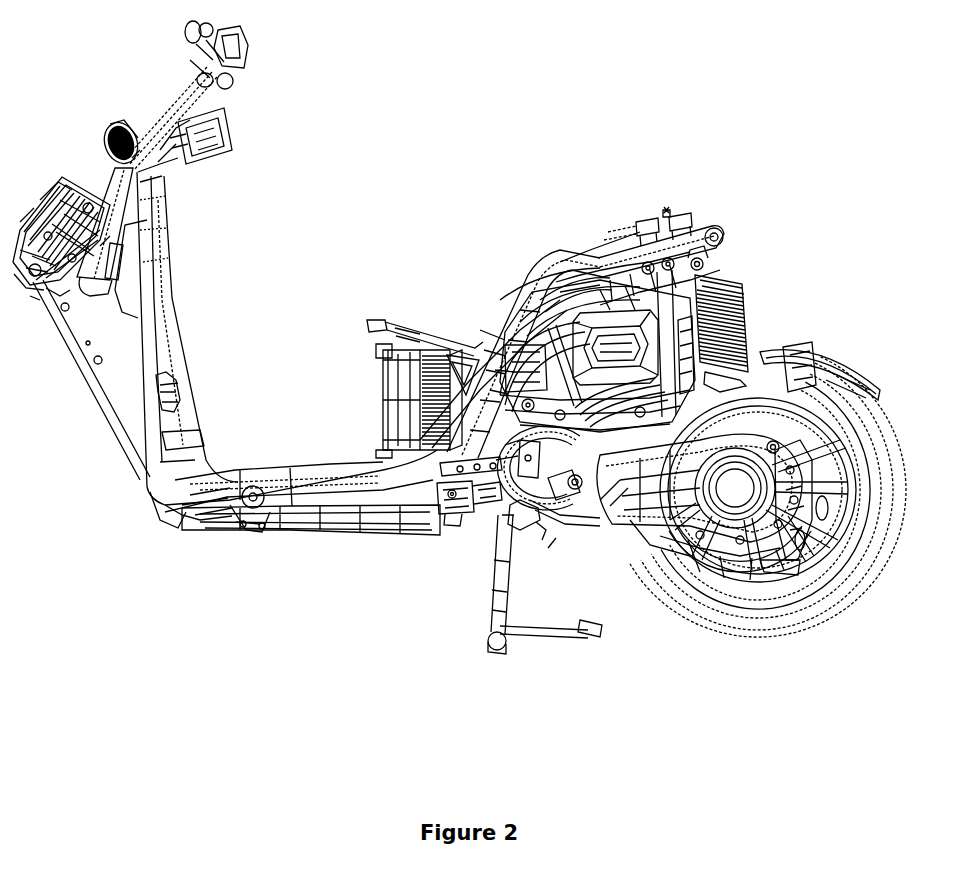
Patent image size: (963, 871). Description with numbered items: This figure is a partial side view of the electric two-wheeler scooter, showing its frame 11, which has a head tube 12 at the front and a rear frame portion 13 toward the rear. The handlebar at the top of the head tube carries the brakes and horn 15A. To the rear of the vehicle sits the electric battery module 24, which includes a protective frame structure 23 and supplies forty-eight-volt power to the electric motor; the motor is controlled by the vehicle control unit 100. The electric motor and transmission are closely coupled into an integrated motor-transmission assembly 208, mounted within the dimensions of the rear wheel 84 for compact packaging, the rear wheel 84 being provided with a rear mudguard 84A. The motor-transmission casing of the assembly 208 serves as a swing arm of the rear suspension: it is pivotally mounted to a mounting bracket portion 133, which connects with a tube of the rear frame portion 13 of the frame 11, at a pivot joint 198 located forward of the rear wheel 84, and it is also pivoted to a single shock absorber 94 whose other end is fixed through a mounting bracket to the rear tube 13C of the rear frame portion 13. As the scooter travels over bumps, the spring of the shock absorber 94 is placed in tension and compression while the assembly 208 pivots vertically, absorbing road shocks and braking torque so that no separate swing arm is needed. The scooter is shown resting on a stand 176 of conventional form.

The frame 11 is at (323, 197).
The head tube 12 is at (142, 344).
The rear frame portion 13 is at (580, 242).
The rear tube 13C is at (698, 254).
The brakes and horn 15A is at (116, 138).
The protective frame structure 23 is at (389, 312).
The electric battery module 24 is at (418, 403).
The vehicle control unit 100 is at (600, 317).
The shock absorber 94 is at (733, 291).
The rear mudguard 84A is at (829, 361).
The rear wheel 84 is at (877, 477).
The integrated motor-transmission assembly 208 is at (741, 498).
The pivot joint 198 is at (556, 516).
The stand 176 is at (561, 645).
The mounting bracket portion 133 is at (487, 494).